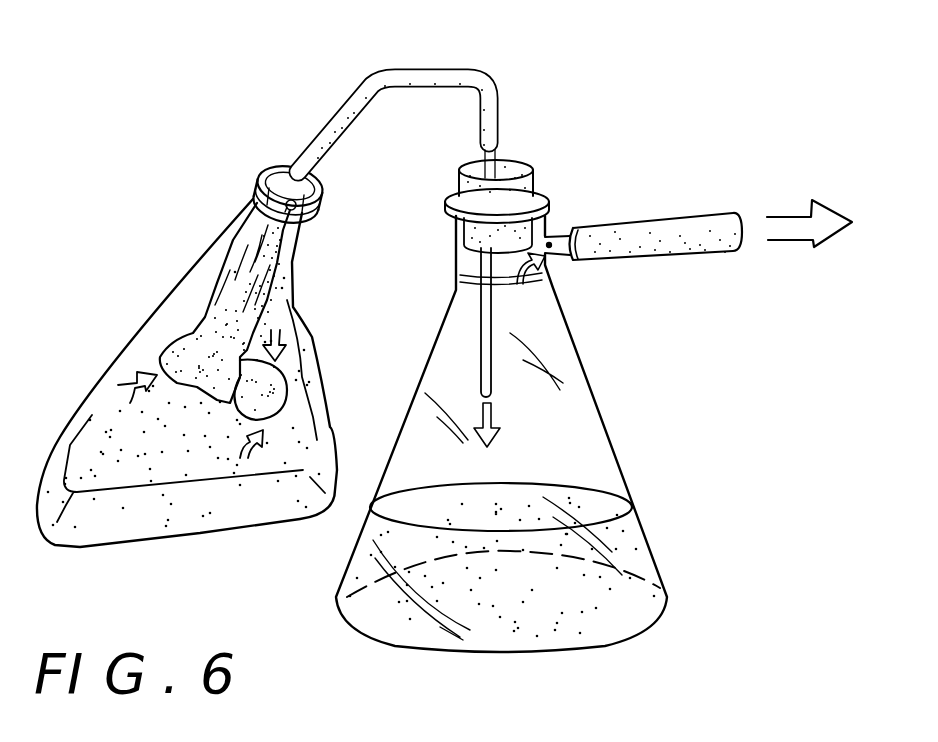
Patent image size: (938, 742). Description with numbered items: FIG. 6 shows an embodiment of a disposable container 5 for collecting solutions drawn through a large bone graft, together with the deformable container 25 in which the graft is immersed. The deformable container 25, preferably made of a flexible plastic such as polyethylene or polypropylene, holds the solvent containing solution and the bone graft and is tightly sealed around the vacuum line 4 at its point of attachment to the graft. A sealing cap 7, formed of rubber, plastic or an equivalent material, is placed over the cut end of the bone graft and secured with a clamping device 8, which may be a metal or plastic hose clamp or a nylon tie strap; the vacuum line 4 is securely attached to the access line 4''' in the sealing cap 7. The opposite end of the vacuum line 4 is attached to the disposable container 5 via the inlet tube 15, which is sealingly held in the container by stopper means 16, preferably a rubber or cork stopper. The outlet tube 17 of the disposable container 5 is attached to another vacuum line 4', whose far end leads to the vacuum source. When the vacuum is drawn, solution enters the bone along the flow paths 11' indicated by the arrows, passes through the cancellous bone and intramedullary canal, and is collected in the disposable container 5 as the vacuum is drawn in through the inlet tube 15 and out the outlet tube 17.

The vacuum line 4 is at (396, 92).
The access line 4''' is at (295, 97).
The vacuum line 4' is at (656, 201).
The disposable container 5 is at (600, 420).
The sealing cap 7 is at (278, 163).
The clamping device 8 is at (257, 185).
The flow paths 11' is at (224, 344).
The inlet tube 15 is at (477, 348).
The stopper means 16 is at (462, 168).
The outlet tube 17 is at (552, 237).
The deformable container 25 is at (108, 373).